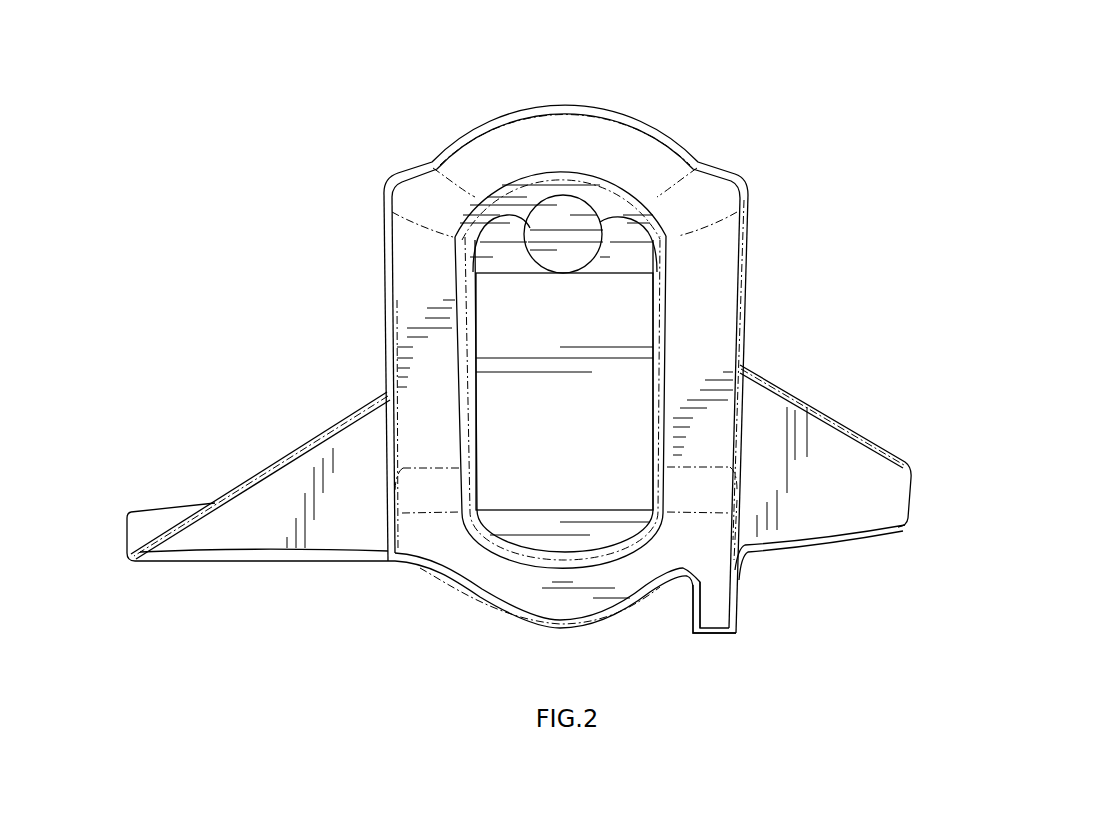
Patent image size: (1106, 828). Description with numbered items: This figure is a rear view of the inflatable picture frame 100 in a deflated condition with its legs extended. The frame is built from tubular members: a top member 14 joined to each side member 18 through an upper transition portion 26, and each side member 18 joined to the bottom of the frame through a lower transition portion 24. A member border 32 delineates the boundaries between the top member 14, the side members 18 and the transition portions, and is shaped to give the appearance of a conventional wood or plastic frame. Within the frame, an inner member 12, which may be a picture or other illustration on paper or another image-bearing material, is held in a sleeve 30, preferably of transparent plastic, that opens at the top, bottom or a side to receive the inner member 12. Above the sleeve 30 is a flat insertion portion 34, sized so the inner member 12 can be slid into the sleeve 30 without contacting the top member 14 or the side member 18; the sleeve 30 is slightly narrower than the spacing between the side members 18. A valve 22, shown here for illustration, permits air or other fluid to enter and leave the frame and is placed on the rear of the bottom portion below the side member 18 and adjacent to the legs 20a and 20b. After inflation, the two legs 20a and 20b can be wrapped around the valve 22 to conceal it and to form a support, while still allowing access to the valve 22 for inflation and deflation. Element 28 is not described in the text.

The inflatable picture frame 100 is at (350, 150).
The inner member 12 is at (577, 440).
The top member 14 is at (677, 135).
The side member 18 is at (752, 282).
The leg 20a is at (287, 462).
The leg 20b is at (900, 462).
The valve 22 is at (733, 610).
The lower transition portion 24 is at (737, 493).
The upper transition portion 26 is at (743, 175).
The spherical member 28 is at (622, 272).
The sleeve 30 is at (472, 293).
The member border 32 is at (400, 211).
The flat insertion portion 34 is at (511, 206).